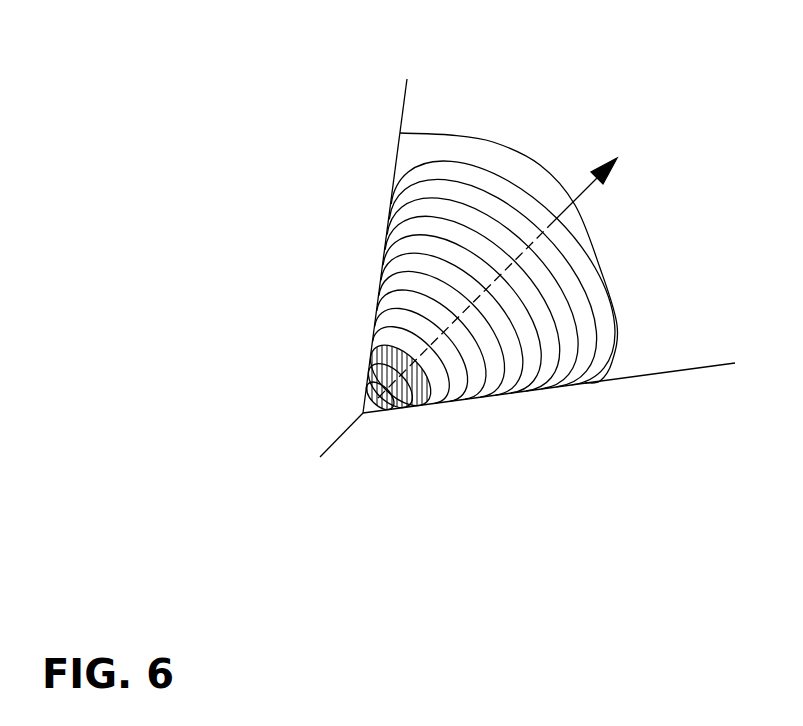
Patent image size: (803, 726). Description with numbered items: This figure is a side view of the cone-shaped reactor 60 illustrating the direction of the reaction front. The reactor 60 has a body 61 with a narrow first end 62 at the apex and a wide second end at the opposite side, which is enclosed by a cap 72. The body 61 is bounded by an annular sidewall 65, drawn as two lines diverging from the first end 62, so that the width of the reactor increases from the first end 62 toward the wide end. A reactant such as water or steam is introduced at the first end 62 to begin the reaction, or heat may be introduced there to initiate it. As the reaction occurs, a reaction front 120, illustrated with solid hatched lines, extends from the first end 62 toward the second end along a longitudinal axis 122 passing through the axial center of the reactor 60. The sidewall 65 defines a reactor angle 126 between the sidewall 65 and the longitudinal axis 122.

The cone-shaped reactor 60 is at (223, 175).
The sidewall 65 is at (402, 110).
The reactor angle 126 is at (493, 140).
The cap 72 is at (598, 268).
The narrow first end 62 is at (377, 391).
The reaction front 120 is at (473, 398).
The body 61 is at (508, 394).
The longitudinal axis 122 is at (338, 440).